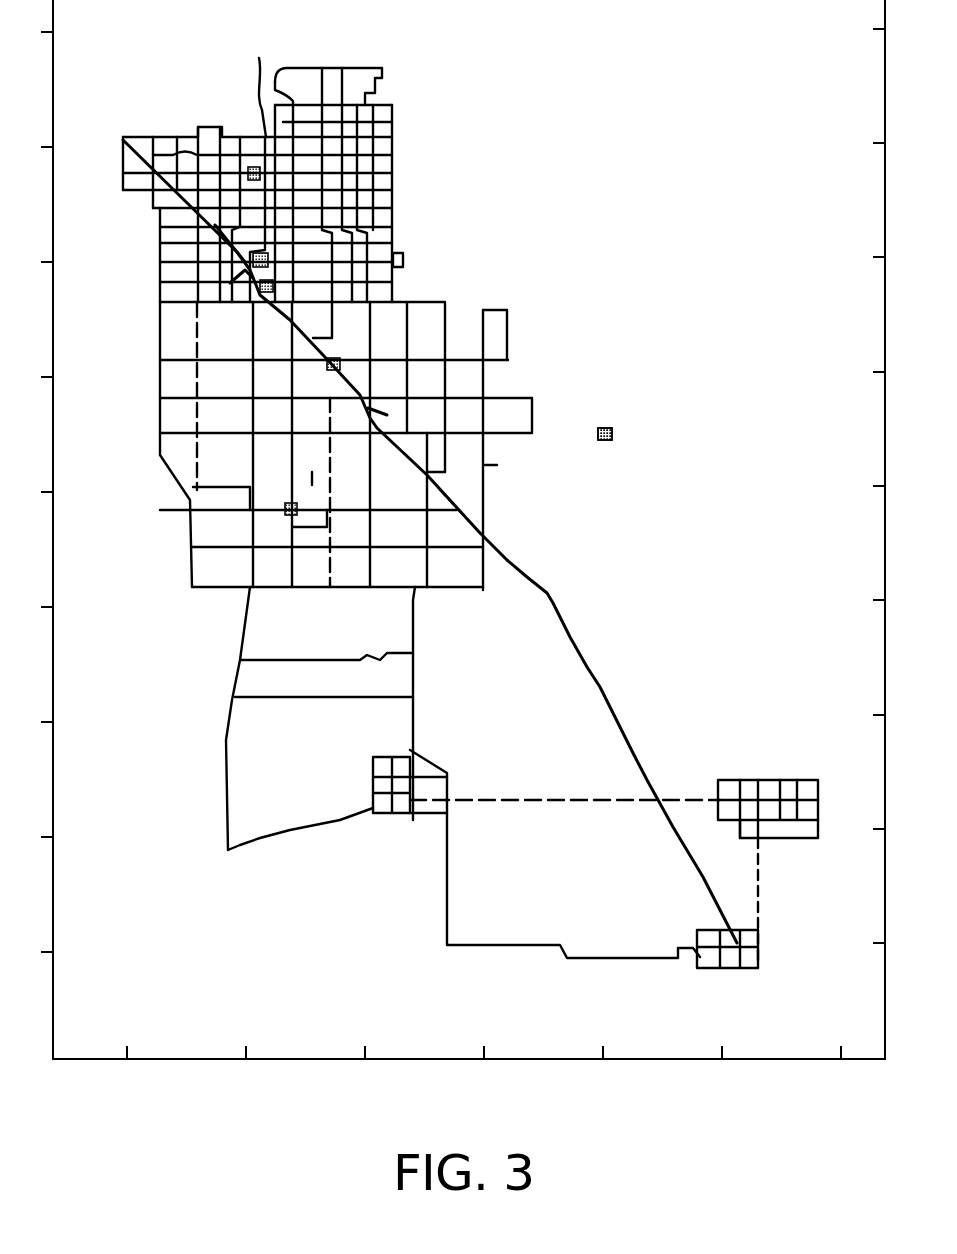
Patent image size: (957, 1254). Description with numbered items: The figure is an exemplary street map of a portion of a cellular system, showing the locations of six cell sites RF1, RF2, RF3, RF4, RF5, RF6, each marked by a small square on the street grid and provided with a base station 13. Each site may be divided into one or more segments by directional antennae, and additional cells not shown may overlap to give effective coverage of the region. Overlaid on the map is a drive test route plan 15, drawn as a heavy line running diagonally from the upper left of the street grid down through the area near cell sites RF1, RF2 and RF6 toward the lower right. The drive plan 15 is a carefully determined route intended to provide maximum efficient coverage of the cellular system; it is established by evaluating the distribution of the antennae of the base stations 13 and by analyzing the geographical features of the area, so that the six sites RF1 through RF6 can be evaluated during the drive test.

The base station 13 is at (602, 427).
The drive test route plan 15 is at (592, 673).
The cell site RF1 is at (288, 261).
The cell site RF2 is at (292, 288).
The cell site RF3 is at (630, 436).
The cell site RF4 is at (282, 175).
The cell site RF5 is at (318, 510).
The cell site RF6 is at (360, 363).